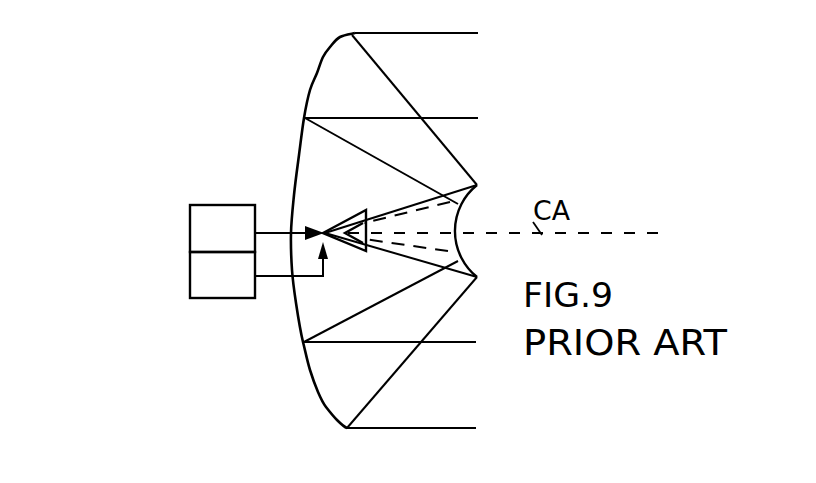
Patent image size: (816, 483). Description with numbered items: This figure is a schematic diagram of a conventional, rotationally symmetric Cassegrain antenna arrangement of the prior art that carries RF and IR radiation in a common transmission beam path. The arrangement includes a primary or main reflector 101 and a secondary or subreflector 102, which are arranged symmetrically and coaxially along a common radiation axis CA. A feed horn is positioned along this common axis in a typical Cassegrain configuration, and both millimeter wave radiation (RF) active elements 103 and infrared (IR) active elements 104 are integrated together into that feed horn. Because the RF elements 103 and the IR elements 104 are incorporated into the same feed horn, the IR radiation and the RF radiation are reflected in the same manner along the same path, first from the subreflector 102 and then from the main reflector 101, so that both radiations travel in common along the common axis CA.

The main reflector 101 is at (310, 90).
The subreflector 102 is at (479, 188).
The RF active elements 103 is at (147, 226).
The IR active elements 104 is at (158, 287).